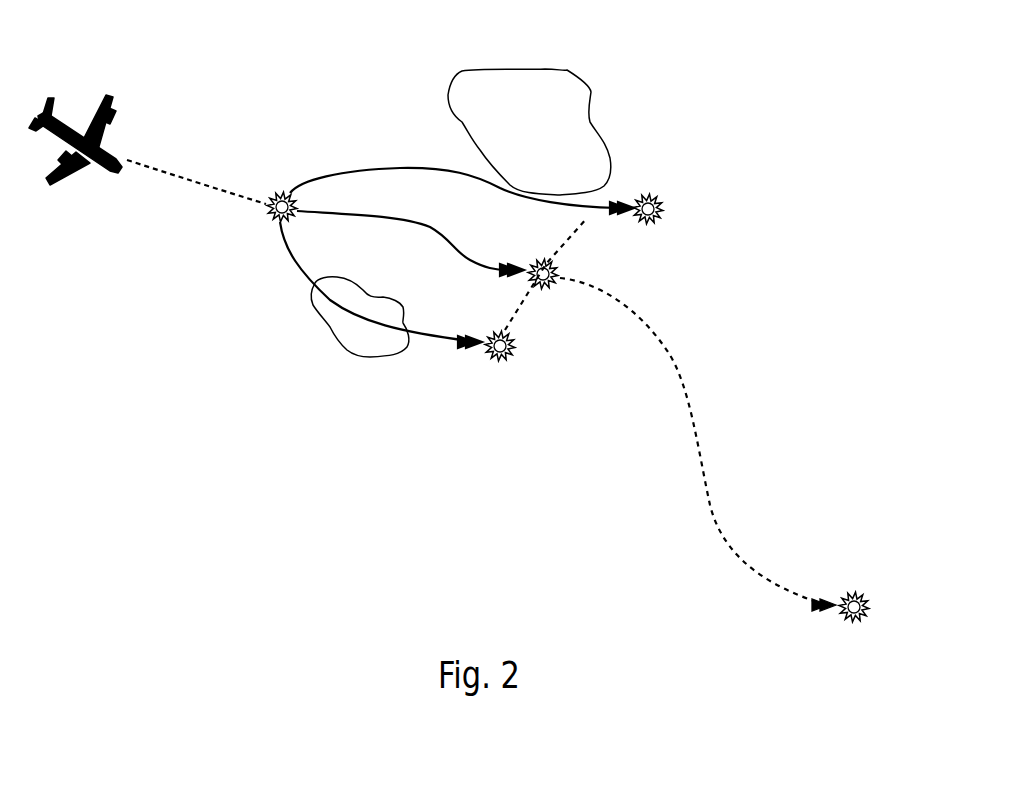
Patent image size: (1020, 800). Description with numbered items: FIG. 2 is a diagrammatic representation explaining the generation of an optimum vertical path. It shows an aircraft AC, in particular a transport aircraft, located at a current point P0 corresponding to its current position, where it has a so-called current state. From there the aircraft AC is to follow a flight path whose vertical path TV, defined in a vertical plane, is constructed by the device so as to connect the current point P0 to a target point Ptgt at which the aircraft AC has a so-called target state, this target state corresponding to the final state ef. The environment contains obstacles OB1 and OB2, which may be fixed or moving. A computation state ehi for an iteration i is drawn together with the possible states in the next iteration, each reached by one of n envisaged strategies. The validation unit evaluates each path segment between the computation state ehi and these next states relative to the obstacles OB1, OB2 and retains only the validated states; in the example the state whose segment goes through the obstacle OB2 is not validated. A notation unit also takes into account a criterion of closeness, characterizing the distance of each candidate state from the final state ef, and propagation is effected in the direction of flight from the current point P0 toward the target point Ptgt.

The aircraft AC is at (70, 121).
The current point P0 is at (84, 190).
The vertical path TV is at (192, 212).
The computation state ehi is at (278, 191).
The obstacle OB1 is at (569, 70).
The obstacle OB2 is at (332, 345).
The target point Ptgt is at (868, 576).
The final state ef is at (849, 622).